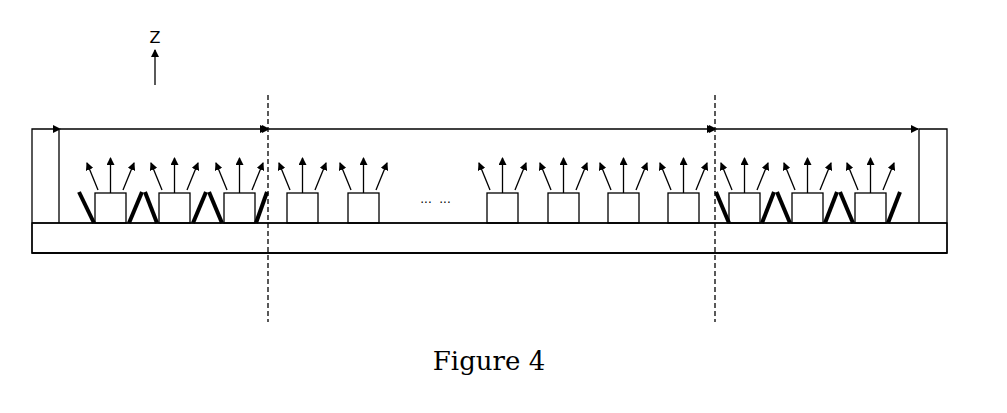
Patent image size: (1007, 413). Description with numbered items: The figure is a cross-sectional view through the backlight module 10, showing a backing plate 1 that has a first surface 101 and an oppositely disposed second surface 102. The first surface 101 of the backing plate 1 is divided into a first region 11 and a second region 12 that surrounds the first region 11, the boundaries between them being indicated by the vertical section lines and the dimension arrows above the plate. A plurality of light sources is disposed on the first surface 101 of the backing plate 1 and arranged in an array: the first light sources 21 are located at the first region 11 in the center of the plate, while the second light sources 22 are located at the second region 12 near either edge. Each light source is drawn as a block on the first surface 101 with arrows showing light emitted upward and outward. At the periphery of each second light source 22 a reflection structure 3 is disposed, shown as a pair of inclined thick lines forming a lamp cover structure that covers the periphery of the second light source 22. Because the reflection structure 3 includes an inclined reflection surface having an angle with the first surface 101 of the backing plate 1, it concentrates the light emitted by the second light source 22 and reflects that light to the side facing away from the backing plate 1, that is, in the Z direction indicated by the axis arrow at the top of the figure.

The display device 10 is at (888, 65).
The backing plate 1 is at (422, 237).
The first surface 101 is at (398, 221).
The second surface 102 is at (459, 255).
The first region 11 is at (491, 129).
The second region 12 is at (489, 129).
The first light sources 21 is at (302, 208).
The second light sources 22 is at (112, 208).
The reflection structure 3 is at (85, 208).